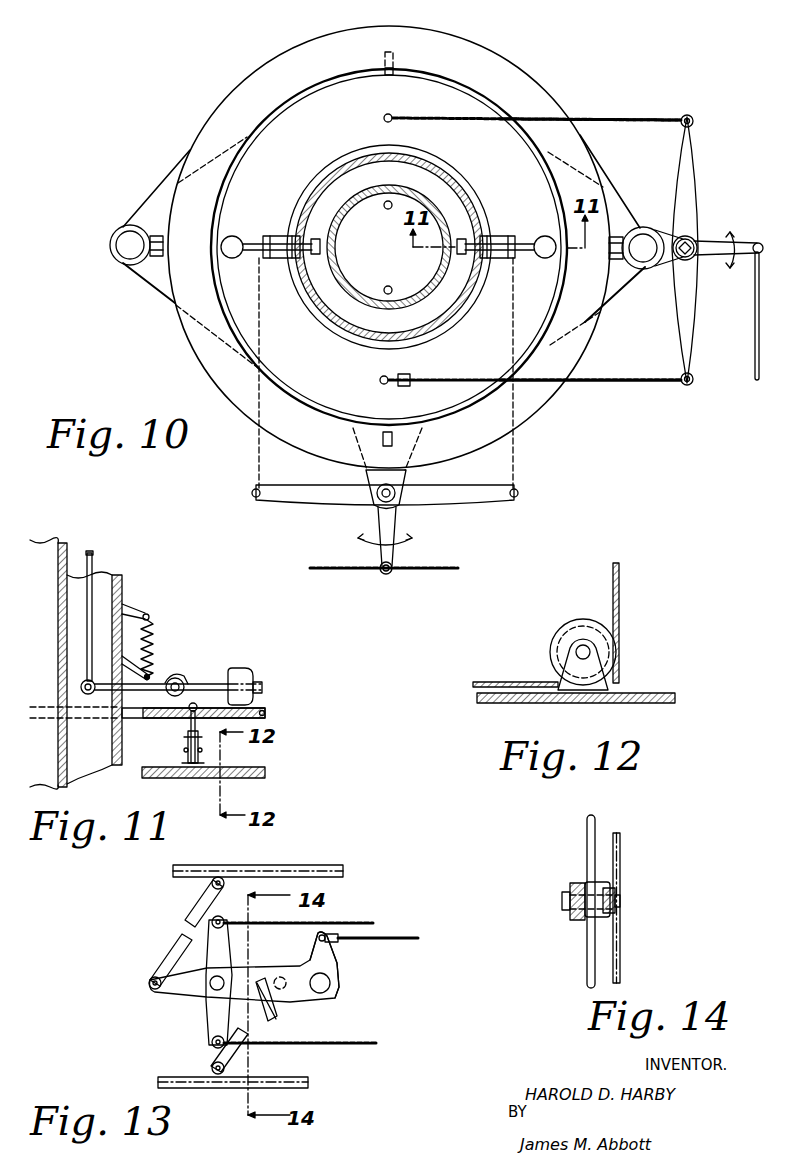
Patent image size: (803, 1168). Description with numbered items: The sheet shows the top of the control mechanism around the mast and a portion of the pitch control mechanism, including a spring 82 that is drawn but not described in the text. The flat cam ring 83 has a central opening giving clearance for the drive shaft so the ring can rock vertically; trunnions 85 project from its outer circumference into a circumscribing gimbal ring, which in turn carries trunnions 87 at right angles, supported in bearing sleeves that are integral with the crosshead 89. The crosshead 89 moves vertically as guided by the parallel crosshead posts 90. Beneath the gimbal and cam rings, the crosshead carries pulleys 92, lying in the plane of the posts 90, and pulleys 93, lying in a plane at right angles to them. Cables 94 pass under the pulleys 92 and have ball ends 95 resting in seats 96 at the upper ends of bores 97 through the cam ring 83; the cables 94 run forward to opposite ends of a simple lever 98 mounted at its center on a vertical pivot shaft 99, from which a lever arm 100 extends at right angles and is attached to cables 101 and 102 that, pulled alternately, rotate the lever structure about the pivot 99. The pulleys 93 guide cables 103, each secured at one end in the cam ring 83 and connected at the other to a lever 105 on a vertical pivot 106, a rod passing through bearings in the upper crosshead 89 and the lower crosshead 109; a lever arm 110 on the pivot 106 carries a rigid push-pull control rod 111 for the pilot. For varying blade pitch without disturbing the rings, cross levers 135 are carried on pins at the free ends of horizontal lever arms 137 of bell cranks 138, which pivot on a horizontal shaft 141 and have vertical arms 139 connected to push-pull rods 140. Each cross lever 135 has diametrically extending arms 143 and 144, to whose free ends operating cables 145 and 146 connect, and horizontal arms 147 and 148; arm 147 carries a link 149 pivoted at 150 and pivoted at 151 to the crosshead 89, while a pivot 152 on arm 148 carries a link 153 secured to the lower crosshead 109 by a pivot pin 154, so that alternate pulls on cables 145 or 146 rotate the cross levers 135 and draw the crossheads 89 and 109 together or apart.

In FIG. 11, the spring 82 is at (152, 624).
In FIG. 10, the cam ring 83 is at (259, 154).
In FIG. 11, the cam ring 83 is at (267, 713).
In FIG. 10, the trunnions 85 is at (395, 63).
In FIG. 10, the trunnions 87 is at (163, 258).
In FIG. 11, the crosshead 89 is at (250, 775).
In FIG. 12, the crosshead 89 is at (650, 692).
In FIG. 13, the crosshead 89 is at (258, 866).
In FIG. 10, the crosshead posts 90 is at (129, 235).
In FIG. 10, the pulleys 92 is at (258, 262).
In FIG. 11, the pulleys 92 is at (203, 732).
In FIG. 12, the pulleys 92 is at (599, 635).
In FIG. 10, the pulleys 93 is at (403, 118).
In FIG. 10, the cables 94 is at (261, 347).
In FIG. 12, the cables 94 is at (621, 576).
In FIG. 11, the ball ends 95 is at (196, 704).
In FIG. 11, the seats 96 is at (166, 702).
In FIG. 11, the bores 97 is at (190, 718).
In FIG. 10, the lever 98 is at (458, 500).
In FIG. 10, the pivot shaft 99 is at (378, 506).
In FIG. 10, the lever arm 100 is at (392, 553).
In FIG. 10, the cable 101 is at (370, 572).
In FIG. 10, the cable 102 is at (425, 572).
In FIG. 10, the cables 103 is at (607, 118).
In FIG. 10, the lever 105 is at (690, 183).
In FIG. 10, the pivot 106 is at (697, 240).
In FIG. 13, the lower crosshead 109 is at (180, 1077).
In FIG. 10, the lever arm 110 is at (716, 255).
In FIG. 10, the push-pull control rod 111 is at (755, 352).
In FIG. 13, the cross levers 135 is at (193, 1002).
In FIG. 13, the lever arms 137 is at (295, 997).
In FIG. 13, the bell cranks 138 is at (342, 997).
In FIG. 13, the vertical arms 139 is at (326, 948).
In FIG. 13, the push-pull rods 140 is at (390, 935).
In FIG. 13, the shaft 141 is at (330, 983).
In FIG. 13, the arm 143 is at (210, 938).
In FIG. 13, the arm 144 is at (216, 1022).
In FIG. 13, the operating cable 145 is at (342, 920).
In FIG. 13, the operating cable 146 is at (358, 1048).
In FIG. 13, the arm 147 is at (187, 980).
In FIG. 13, the arm 148 is at (263, 996).
In FIG. 13, the link 149 is at (197, 900).
In FIG. 13, the pivot 150 is at (150, 983).
In FIG. 13, the pivot 151 is at (218, 878).
In FIG. 13, the pivot 152 is at (279, 978).
In FIG. 13, the link 153 is at (236, 1053).
In FIG. 13, the pivot pin 154 is at (218, 1075).